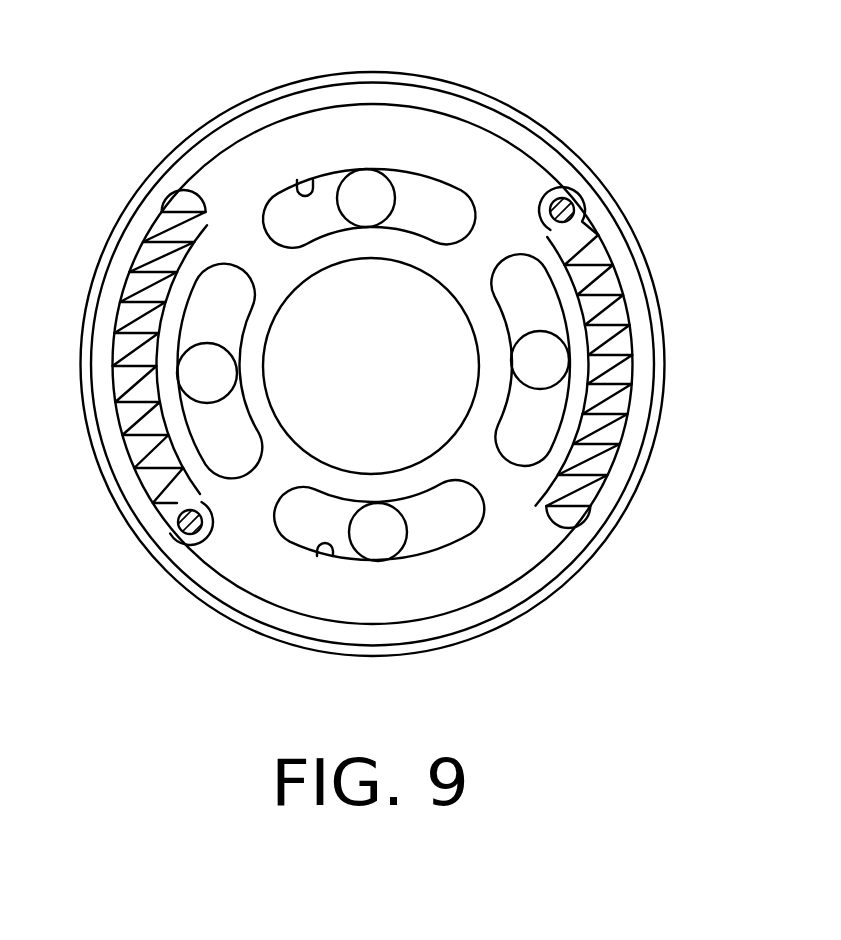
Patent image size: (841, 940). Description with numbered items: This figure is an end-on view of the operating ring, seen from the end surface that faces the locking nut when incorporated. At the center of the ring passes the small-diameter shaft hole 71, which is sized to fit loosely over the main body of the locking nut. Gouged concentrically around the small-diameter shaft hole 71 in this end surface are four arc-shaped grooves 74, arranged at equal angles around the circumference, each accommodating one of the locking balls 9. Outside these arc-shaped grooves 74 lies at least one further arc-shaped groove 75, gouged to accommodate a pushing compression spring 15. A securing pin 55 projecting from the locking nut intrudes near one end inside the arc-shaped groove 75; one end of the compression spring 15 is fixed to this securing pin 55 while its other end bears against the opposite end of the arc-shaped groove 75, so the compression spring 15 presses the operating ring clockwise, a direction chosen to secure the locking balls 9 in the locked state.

The locking balls 9 is at (371, 180).
The compression spring 15 is at (634, 352).
The securing pin 55 is at (574, 206).
The small-diameter shaft hole 71 is at (313, 418).
The arc-shaped grooves 74 is at (305, 186).
The arc-shaped groove 75 is at (606, 250).